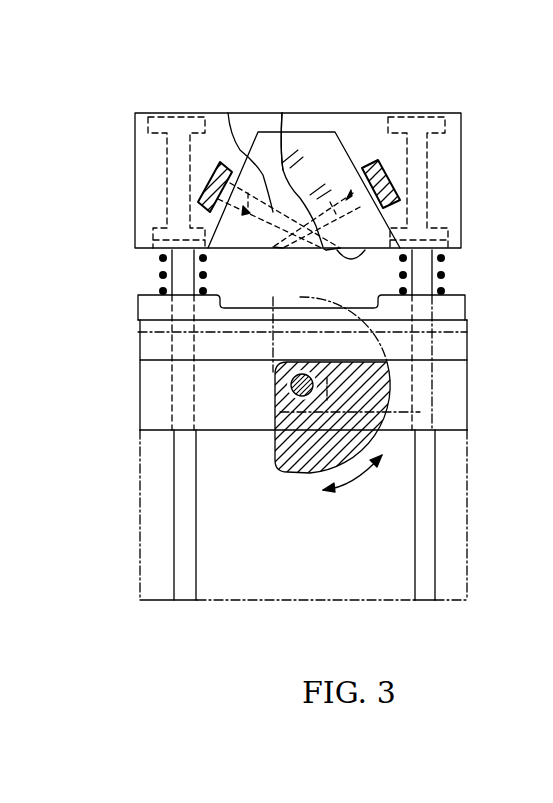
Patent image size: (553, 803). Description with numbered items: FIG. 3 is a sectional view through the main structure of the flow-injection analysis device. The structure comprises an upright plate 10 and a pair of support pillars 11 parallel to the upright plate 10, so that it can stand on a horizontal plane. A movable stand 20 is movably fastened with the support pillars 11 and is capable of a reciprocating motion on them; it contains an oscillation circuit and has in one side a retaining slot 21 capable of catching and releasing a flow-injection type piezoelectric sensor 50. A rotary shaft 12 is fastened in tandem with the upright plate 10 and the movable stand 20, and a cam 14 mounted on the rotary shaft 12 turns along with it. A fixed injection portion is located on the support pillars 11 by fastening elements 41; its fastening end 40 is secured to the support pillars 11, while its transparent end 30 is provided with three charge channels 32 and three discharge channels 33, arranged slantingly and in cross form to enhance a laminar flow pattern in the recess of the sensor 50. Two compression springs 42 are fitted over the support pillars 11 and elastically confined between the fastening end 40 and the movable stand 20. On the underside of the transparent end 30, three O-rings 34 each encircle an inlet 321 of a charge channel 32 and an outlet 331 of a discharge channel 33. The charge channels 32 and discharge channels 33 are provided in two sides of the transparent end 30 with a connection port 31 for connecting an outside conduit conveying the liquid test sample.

The upright plate 10 is at (458, 492).
The support pillars 11 is at (427, 530).
The rotary shaft 12 is at (293, 387).
The cam 14 is at (298, 458).
The movable stand 20 is at (457, 303).
The retaining slot 21 is at (222, 300).
The transparent end 30 is at (313, 143).
The connection port 31 is at (380, 158).
The charge channels 32 is at (282, 113).
The discharge channels 33 is at (228, 113).
The O-rings 34 is at (365, 250).
The fastening end 40 is at (212, 120).
The fastening elements 41 is at (398, 117).
The compression springs 42 is at (445, 270).
The flow-injection type piezoelectric sensor 50 is at (380, 308).
The inlet 321 is at (270, 250).
The outlet 331 is at (332, 250).